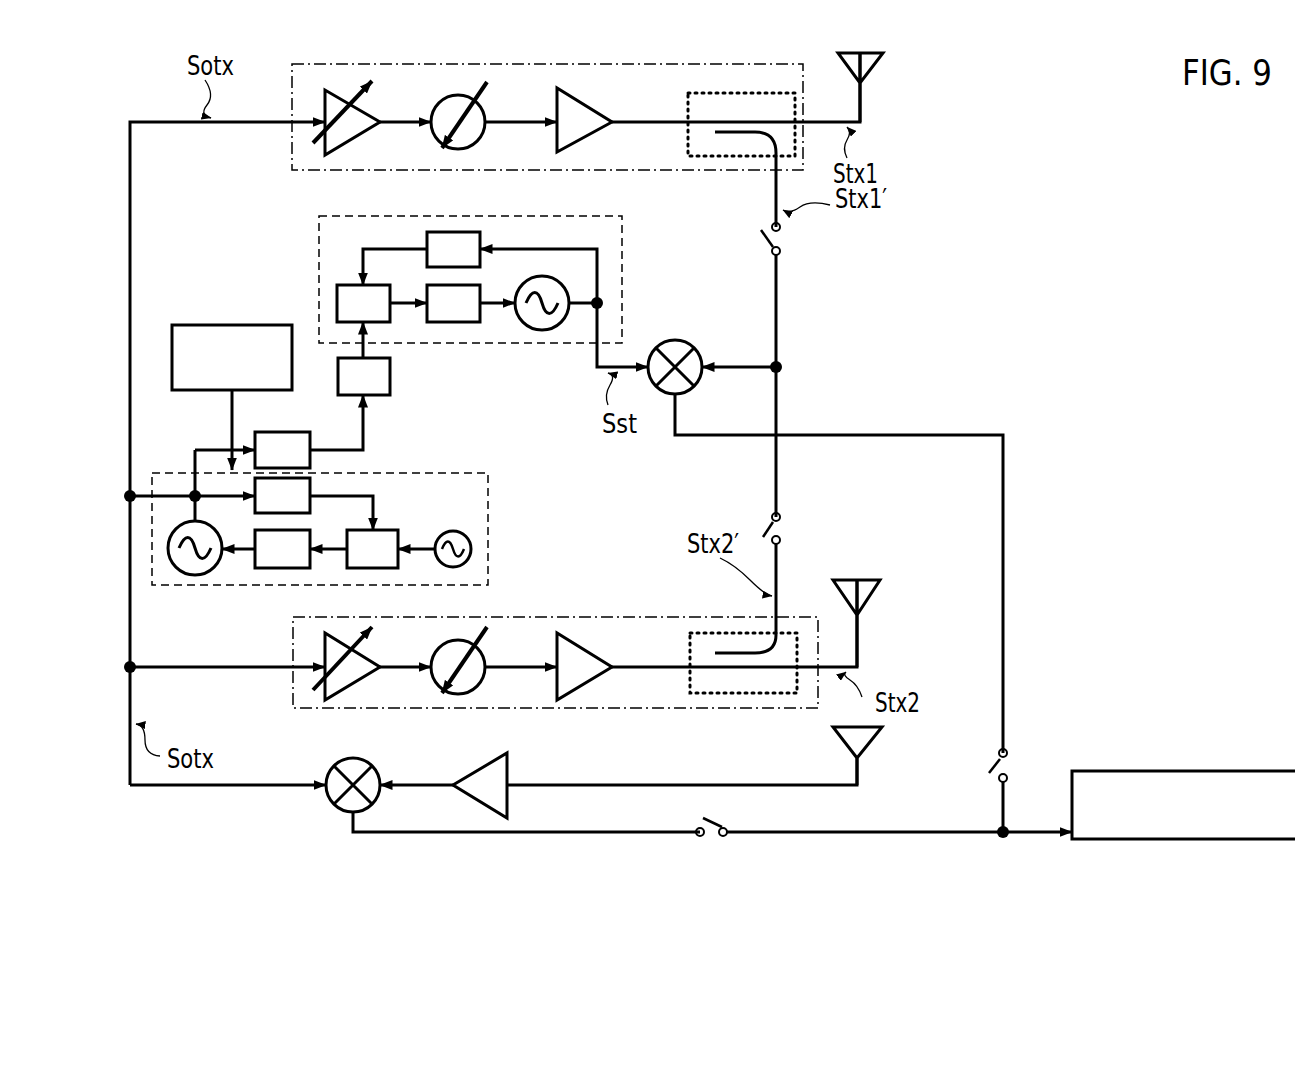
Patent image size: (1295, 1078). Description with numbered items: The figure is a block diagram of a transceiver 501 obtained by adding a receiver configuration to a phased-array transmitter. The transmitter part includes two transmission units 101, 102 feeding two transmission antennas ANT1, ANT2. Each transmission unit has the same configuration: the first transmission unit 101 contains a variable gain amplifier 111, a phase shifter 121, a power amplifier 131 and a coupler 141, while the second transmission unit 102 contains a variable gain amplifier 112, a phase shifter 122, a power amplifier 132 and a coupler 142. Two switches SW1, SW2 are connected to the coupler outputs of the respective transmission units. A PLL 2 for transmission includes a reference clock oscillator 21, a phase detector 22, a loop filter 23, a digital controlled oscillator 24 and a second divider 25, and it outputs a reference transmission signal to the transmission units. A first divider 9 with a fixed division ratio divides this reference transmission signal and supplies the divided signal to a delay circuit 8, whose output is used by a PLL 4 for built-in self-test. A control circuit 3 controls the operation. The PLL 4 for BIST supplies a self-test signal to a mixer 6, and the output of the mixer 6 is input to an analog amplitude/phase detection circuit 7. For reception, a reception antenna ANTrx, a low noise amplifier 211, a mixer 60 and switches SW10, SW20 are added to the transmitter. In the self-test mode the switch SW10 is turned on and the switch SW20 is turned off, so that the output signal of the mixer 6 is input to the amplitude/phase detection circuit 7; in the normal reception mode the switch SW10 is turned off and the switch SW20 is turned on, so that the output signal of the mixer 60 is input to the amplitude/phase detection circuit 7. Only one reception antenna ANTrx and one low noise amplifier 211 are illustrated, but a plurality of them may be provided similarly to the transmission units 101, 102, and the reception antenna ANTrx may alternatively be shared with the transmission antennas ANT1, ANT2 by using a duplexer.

The transceiver 501 is at (1100, 122).
The transmission unit 101 is at (312, 173).
The variable gain amplifier 111 is at (355, 140).
The phase shifter 121 is at (483, 143).
The power amplifier 131 is at (584, 140).
The coupler 141 is at (730, 158).
The transmission unit 102 is at (312, 708).
The variable gain amplifier 112 is at (350, 688).
The phase shifter 122 is at (480, 688).
The power amplifier 132 is at (580, 688).
The coupler 142 is at (760, 695).
The control circuit 3 is at (185, 325).
The PLL for BIST 4 is at (555, 348).
The mixer 6 is at (675, 340).
The delay circuit 8 is at (392, 380).
The first divider 9 is at (297, 430).
The PLL for transmission 2 is at (354, 541).
The reference clock oscillator 21 is at (471, 541).
The phase detector 22 is at (375, 568).
The loop filter 23 is at (262, 568).
The digital controlled oscillator 24 is at (200, 575).
The second divider 25 is at (313, 483).
The mixer 60 is at (329, 800).
The low noise amplifier 211 is at (508, 762).
The amplitude/phase detection circuit 7 is at (1188, 770).
The transmission antenna ANT1 is at (873, 72).
The transmission antenna ANT2 is at (871, 600).
The reception antenna ANTrx is at (871, 746).
The switch SW1 is at (785, 238).
The switch SW2 is at (785, 527).
The switch SW10 is at (1012, 765).
The switch SW20 is at (696, 818).